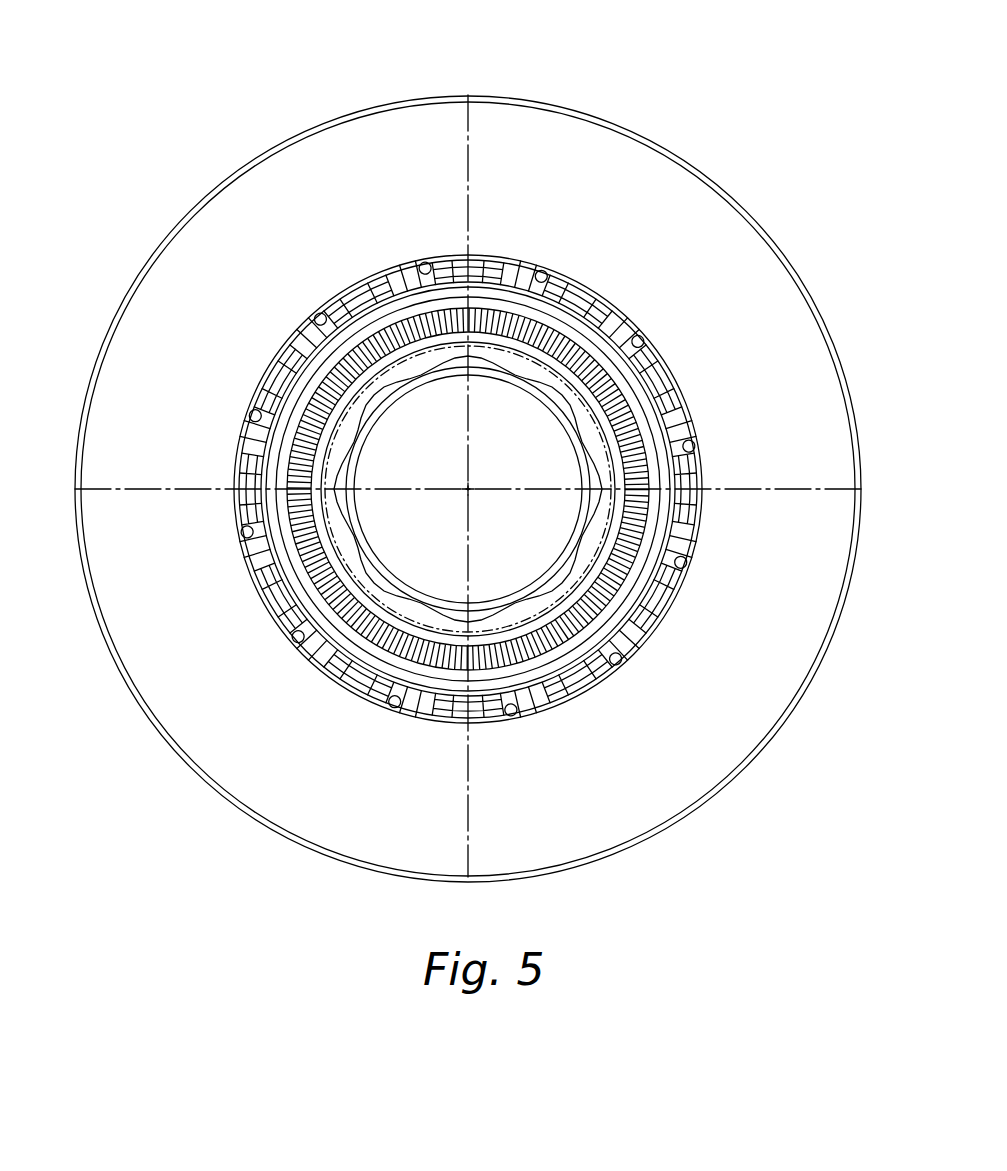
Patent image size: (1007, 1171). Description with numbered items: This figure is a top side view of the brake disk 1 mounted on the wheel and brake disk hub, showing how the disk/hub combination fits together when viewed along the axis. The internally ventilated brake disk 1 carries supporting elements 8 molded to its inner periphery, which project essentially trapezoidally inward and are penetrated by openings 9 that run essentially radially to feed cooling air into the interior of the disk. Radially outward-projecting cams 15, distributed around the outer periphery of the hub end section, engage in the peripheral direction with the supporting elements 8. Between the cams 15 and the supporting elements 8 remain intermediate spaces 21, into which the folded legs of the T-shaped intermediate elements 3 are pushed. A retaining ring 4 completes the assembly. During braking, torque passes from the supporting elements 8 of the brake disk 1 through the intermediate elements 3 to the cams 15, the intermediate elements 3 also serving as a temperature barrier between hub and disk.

The brake disk 1 is at (615, 180).
The intermediate elements 3 is at (351, 288).
The retaining ring 4 is at (477, 262).
The supporting elements 8 is at (333, 313).
The openings 9 is at (598, 297).
The cams 15 is at (373, 277).
The intermediate spaces 21 is at (362, 283).